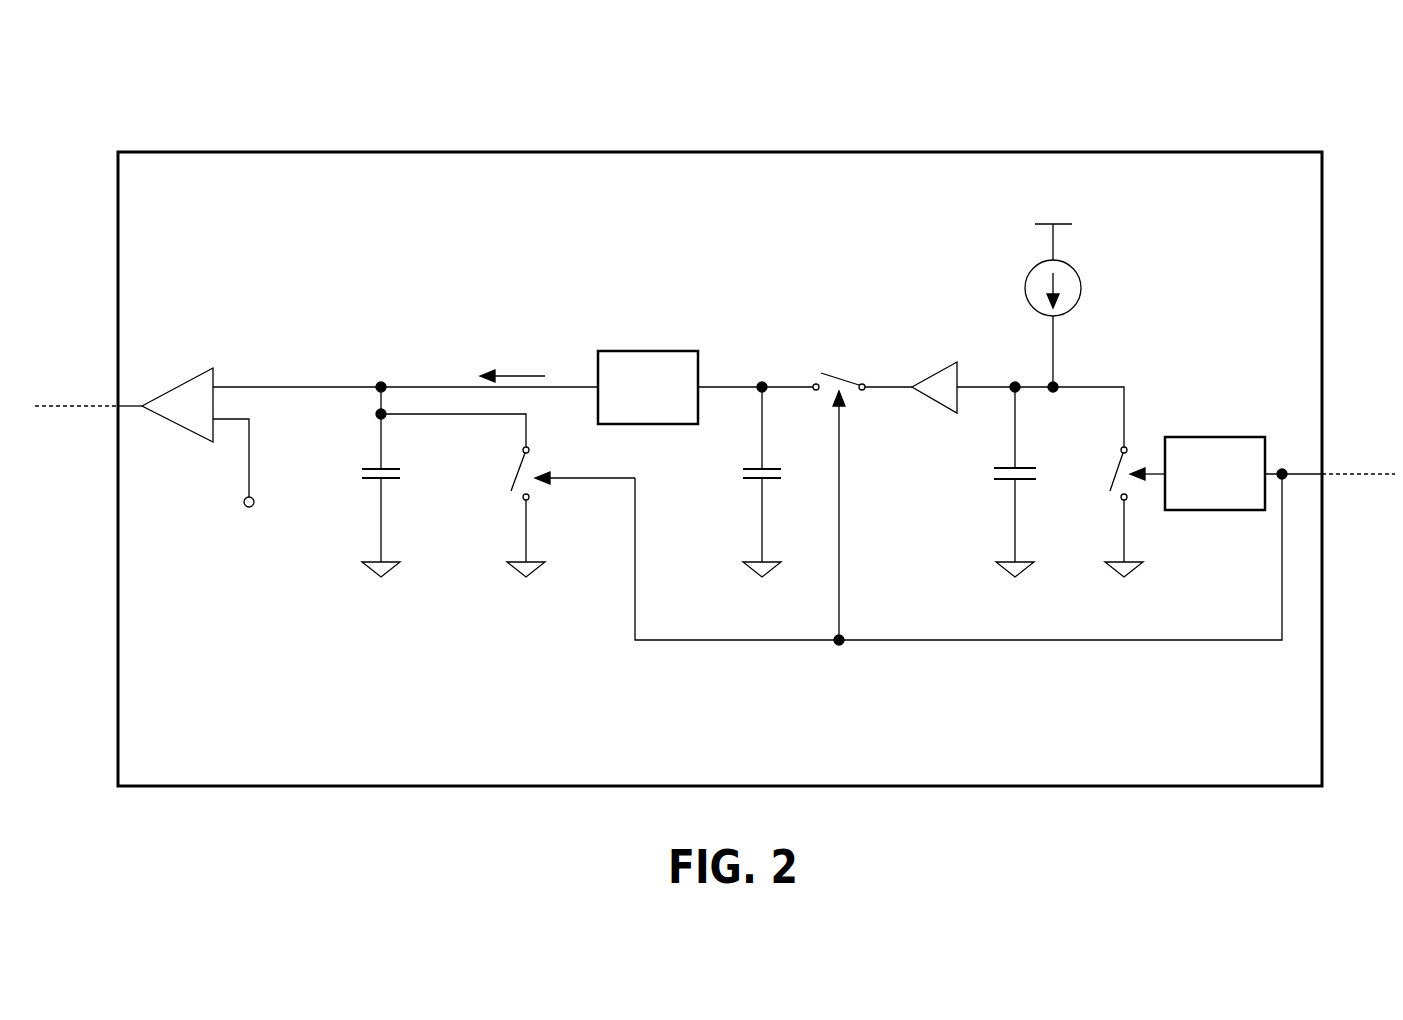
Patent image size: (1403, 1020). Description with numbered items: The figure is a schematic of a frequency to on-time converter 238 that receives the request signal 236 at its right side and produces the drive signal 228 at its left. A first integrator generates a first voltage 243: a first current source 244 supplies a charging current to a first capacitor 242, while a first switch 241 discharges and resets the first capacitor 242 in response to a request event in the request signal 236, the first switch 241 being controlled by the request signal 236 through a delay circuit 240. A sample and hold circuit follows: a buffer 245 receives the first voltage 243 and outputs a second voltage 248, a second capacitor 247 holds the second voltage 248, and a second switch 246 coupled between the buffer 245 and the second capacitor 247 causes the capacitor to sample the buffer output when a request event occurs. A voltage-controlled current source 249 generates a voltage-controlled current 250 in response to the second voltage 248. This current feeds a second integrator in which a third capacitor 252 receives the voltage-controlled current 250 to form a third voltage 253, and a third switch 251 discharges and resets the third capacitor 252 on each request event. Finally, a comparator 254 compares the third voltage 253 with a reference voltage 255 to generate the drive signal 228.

The frequency to on-time converter 238 is at (1128, 66).
The comparator 254 is at (181, 374).
The drive signal UDR 228 is at (83, 425).
The reference voltage VREF 255 is at (228, 556).
The third voltage V3 253 is at (325, 472).
The third capacitor C3 252 is at (403, 490).
The third switch S3 251 is at (540, 494).
The voltage-controlled current I2 250 is at (503, 337).
The voltage-controlled current source 249 is at (638, 345).
The second switch S2 246 is at (836, 337).
The second voltage V2 248 is at (700, 472).
The second capacitor C2 247 is at (803, 490).
The buffer 245 is at (938, 363).
The first current source 244 is at (1092, 293).
The first voltage V1 243 is at (960, 480).
The first capacitor C1 242 is at (1036, 490).
The first switch S1 241 is at (1098, 438).
The delay circuit 240 is at (1200, 526).
The request signal UREQ 236 is at (1356, 482).